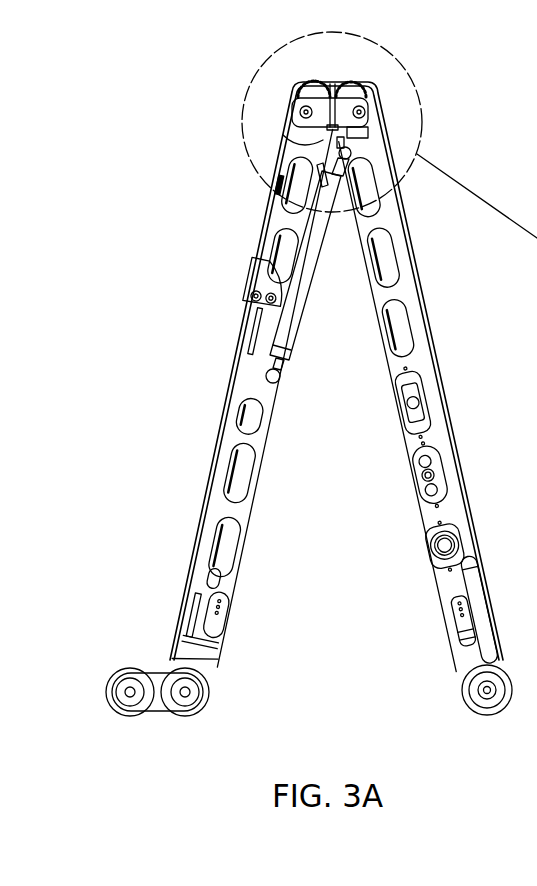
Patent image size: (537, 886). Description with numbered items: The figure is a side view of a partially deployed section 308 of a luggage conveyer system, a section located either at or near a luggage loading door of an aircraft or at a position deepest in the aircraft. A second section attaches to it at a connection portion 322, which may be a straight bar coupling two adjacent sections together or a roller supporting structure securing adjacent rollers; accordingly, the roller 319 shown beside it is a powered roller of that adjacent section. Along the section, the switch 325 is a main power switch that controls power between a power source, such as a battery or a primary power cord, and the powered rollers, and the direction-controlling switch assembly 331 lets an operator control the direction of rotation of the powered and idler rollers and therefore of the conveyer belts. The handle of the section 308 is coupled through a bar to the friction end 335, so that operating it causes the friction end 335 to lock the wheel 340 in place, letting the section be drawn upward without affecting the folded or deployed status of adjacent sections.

The section 308 is at (280, 180).
The roller 319 is at (133, 667).
The connection portion 322 is at (160, 668).
The switch 325 is at (395, 408).
The direction-controlling switch assembly 331 is at (415, 476).
The friction end 335 is at (205, 667).
The wheel 340 is at (207, 695).